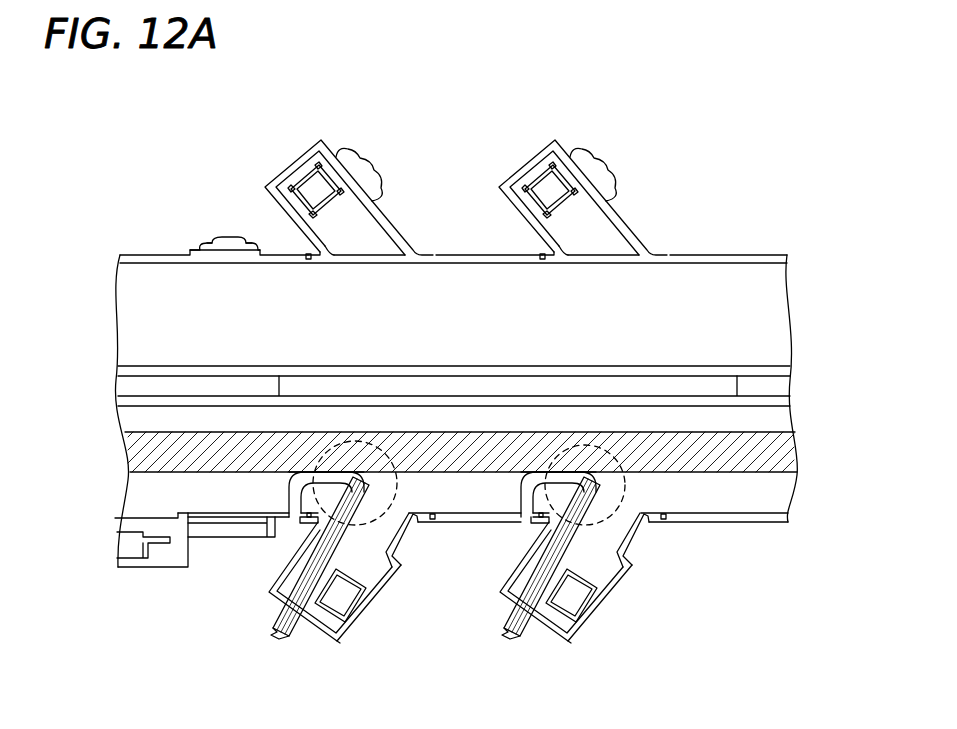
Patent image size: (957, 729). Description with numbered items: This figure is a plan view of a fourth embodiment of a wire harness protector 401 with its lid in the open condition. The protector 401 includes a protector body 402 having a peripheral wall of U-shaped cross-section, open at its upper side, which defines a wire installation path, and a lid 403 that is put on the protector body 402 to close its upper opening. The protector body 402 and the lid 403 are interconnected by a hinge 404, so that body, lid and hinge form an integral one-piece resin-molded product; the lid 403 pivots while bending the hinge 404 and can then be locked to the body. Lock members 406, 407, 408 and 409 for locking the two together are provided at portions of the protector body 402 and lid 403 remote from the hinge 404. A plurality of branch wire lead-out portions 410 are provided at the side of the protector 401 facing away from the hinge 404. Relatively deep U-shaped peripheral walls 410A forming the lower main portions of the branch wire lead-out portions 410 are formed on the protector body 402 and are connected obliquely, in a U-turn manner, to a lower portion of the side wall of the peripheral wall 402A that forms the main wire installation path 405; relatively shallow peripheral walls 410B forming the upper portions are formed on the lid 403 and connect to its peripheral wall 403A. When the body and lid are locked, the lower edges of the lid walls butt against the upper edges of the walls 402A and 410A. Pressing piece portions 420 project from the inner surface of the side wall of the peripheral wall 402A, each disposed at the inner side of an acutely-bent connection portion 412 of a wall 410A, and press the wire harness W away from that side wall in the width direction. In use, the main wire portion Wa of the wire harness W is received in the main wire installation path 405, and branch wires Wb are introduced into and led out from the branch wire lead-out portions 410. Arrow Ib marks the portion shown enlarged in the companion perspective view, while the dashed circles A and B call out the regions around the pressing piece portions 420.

The wire harness protector 401 is at (728, 213).
The protector body 402 is at (743, 523).
The peripheral wall of protector body 402A is at (766, 498).
The lid 403 is at (767, 254).
The peripheral wall of lid 403A is at (765, 313).
The hinge 404 is at (745, 388).
The main wire installation path 405 is at (145, 498).
The lock member 406 is at (205, 550).
The lock member 407 is at (363, 613).
The lock member 408 is at (216, 237).
The lock member 409 is at (368, 170).
The branch wire lead-out portion 410 is at (260, 584).
The peripheral wall of branch wire lead-out portion on protector body 410A is at (266, 590).
The peripheral wall of branch wire lead-out portion on lid 410B is at (327, 144).
The acutely-bent connection portion 412 is at (308, 528).
The pressing piece portion 420 is at (308, 485).
The wire harness W is at (125, 453).
The main wire portion Wa is at (152, 463).
The branch wire Wb is at (286, 636).
The arrow Ib is at (340, 648).
The detail region A is at (383, 438).
The detail region B is at (602, 460).